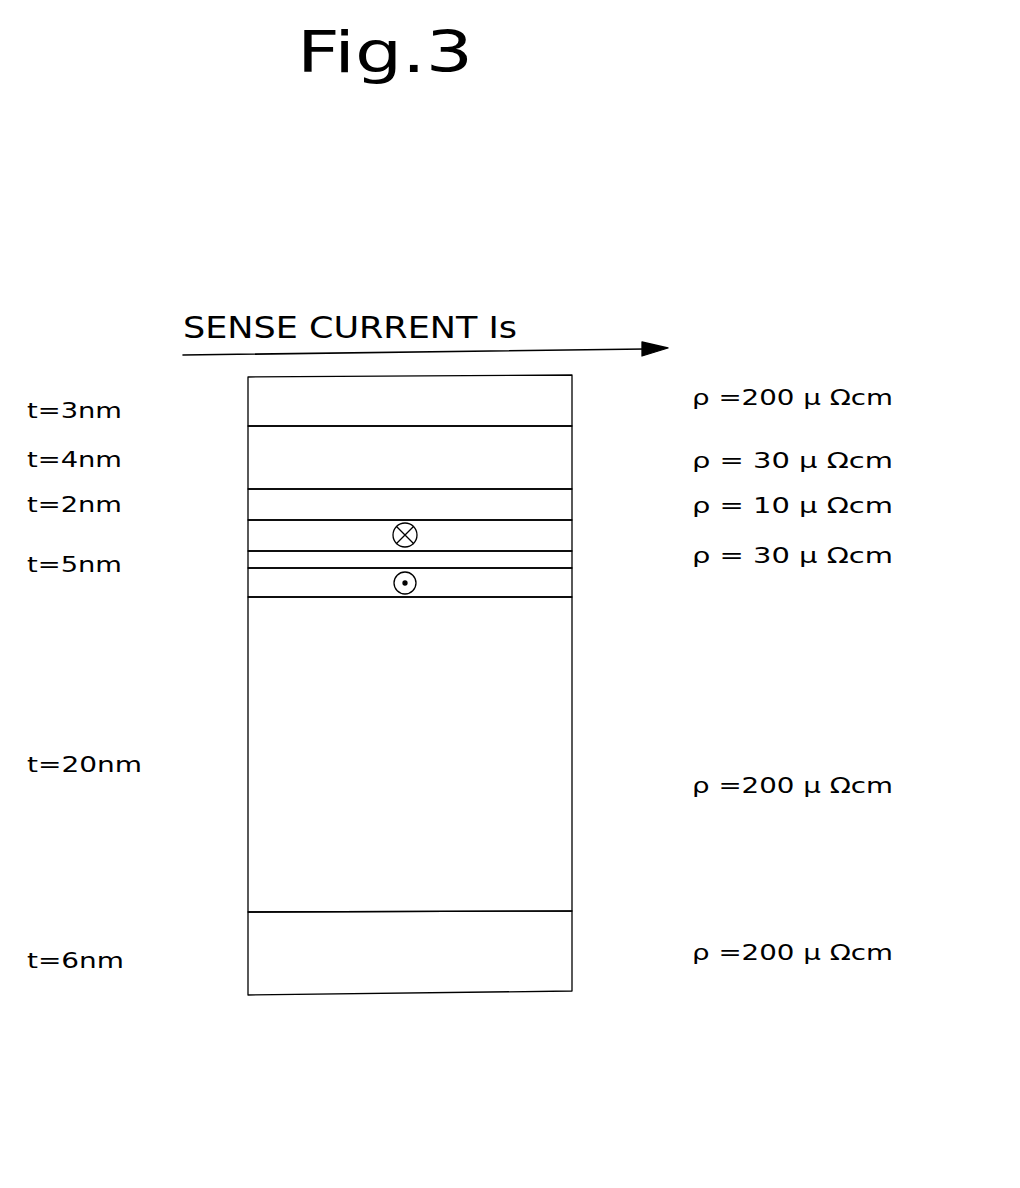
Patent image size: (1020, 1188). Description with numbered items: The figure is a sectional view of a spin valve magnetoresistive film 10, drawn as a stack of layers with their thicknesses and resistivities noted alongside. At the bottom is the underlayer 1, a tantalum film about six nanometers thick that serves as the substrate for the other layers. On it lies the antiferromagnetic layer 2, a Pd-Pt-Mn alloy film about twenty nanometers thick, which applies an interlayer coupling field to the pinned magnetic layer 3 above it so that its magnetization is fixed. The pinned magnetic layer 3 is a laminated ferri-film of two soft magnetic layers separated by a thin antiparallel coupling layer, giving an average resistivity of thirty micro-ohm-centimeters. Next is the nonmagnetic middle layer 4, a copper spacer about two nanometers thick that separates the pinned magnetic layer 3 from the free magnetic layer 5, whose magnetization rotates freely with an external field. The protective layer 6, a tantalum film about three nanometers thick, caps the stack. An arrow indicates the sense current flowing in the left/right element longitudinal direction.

The magnetoresistive film 10 is at (692, 323).
The underlayer 1 is at (573, 950).
The antiferromagnetic layer 2 is at (573, 660).
The pinned magnetic layer 3 is at (389, 562).
The nonmagnetic middle layer 4 is at (573, 502).
The free magnetic layer 5 is at (573, 454).
The protective layer 6 is at (573, 403).